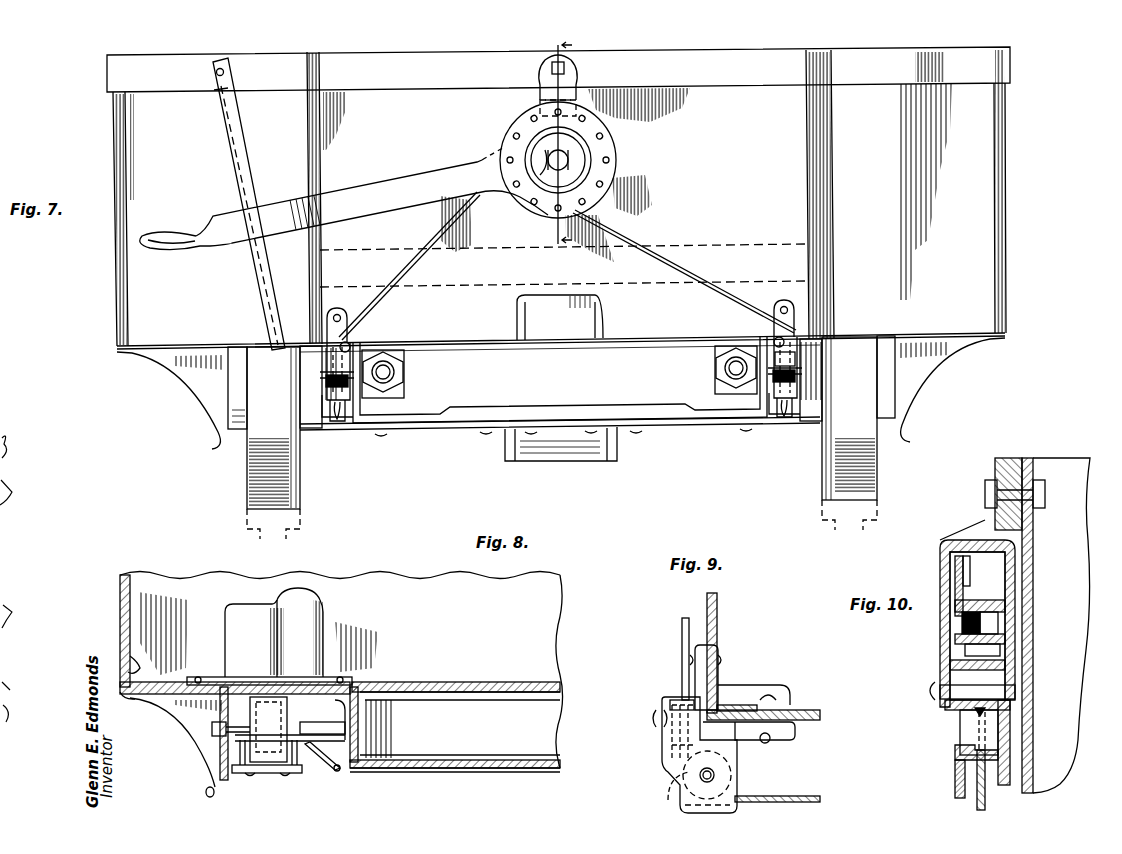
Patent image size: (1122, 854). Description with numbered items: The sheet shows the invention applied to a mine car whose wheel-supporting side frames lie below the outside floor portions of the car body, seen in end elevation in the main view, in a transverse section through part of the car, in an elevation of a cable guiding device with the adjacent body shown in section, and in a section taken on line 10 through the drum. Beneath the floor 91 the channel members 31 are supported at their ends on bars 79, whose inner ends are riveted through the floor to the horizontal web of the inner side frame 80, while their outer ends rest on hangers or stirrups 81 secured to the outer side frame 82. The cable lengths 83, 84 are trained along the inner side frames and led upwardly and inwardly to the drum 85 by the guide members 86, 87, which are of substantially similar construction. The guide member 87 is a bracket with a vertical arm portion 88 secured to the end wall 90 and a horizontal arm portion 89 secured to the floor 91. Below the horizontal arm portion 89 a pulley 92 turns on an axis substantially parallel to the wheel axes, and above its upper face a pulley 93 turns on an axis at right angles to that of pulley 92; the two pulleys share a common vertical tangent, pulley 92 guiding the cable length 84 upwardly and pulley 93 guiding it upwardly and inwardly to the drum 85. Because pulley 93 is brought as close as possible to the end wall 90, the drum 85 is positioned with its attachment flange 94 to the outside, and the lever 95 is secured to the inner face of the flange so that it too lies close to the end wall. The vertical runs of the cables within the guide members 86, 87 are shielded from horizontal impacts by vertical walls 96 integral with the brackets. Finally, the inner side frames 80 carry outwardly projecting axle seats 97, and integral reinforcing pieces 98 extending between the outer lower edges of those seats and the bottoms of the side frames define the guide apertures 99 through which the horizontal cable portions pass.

In FIG. 7, the section line 10 is at (555, 139).
In FIG. 8, the channel members 31 is at (288, 770).
In FIG. 8, the bars 79 is at (370, 770).
In FIG. 7, the inner side frame 80 is at (352, 412).
In FIG. 8, the inner side frame 80 is at (358, 710).
In FIG. 8, the hangers or stirrups 81 is at (243, 774).
In FIG. 7, the outer side frame 82 is at (218, 412).
In FIG. 8, the outer side frame 82 is at (218, 760).
In FIG. 7, the cable length 83 is at (452, 226).
In FIG. 8, the cable length 83 is at (338, 772).
In FIG. 7, the cable length 84 is at (640, 247).
In FIG. 9, the cable length 84 is at (815, 795).
In FIG. 10, the cable length 84 is at (986, 798).
In FIG. 7, the drum 85 is at (580, 160).
In FIG. 10, the drum 85 is at (978, 602).
In FIG. 7, the guide member 86 is at (325, 342).
In FIG. 7, the guide member 87 is at (800, 332).
In FIG. 9, the guide member 87 is at (662, 745).
In FIG. 7, the vertical arm portion 88 is at (340, 310).
In FIG. 9, the vertical arm portion 88 is at (700, 662).
In FIG. 9, the horizontal arm portion 89 is at (775, 740).
In FIG. 7, the end wall 90 is at (790, 186).
In FIG. 9, the end wall 90 is at (718, 635).
In FIG. 7, the floor 91 is at (820, 340).
In FIG. 8, the floor 91 is at (165, 698).
In FIG. 9, the floor 91 is at (808, 712).
In FIG. 7, the pulley 92 is at (328, 382).
In FIG. 9, the pulley 92 is at (722, 786).
In FIG. 7, the pulley 93 is at (352, 341).
In FIG. 9, the pulley 93 is at (668, 705).
In FIG. 7, the attachment flange 94 is at (612, 142).
In FIG. 10, the attachment flange 94 is at (960, 584).
In FIG. 7, the lever 95 is at (358, 194).
In FIG. 7, the vertical walls 96 is at (797, 360).
In FIG. 9, the vertical walls 96 is at (665, 772).
In FIG. 7, the axle seats 97 is at (328, 419).
In FIG. 7, the reinforcing pieces 98 is at (337, 423).
In FIG. 7, the guide apertures 99 is at (342, 423).